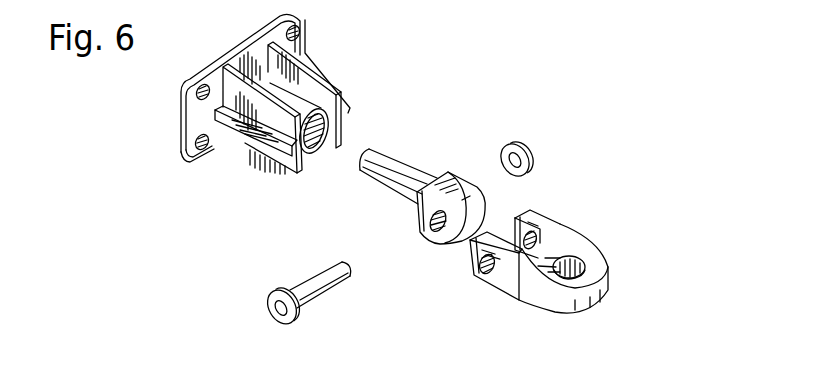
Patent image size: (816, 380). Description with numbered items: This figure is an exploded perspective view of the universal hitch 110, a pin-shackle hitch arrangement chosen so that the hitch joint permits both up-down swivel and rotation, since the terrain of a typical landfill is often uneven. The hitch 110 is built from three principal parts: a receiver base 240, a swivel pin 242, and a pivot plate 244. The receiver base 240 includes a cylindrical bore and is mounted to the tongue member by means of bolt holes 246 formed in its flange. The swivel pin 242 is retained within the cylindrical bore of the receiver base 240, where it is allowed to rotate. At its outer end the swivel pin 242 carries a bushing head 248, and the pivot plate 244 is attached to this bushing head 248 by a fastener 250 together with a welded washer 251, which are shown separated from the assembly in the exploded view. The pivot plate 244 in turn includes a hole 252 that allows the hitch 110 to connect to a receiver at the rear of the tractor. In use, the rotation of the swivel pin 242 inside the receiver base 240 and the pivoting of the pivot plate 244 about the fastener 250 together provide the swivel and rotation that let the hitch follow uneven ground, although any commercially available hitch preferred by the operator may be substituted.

The universal hitch 110 is at (529, 96).
The receiver base 240 is at (203, 164).
The swivel pin 242 is at (405, 163).
The pivot plate 244 is at (585, 237).
The bolt holes 246 is at (300, 37).
The bushing head 248 is at (442, 244).
The fastener 250 is at (310, 283).
The welded washer 251 is at (531, 152).
The hole 252 is at (586, 266).